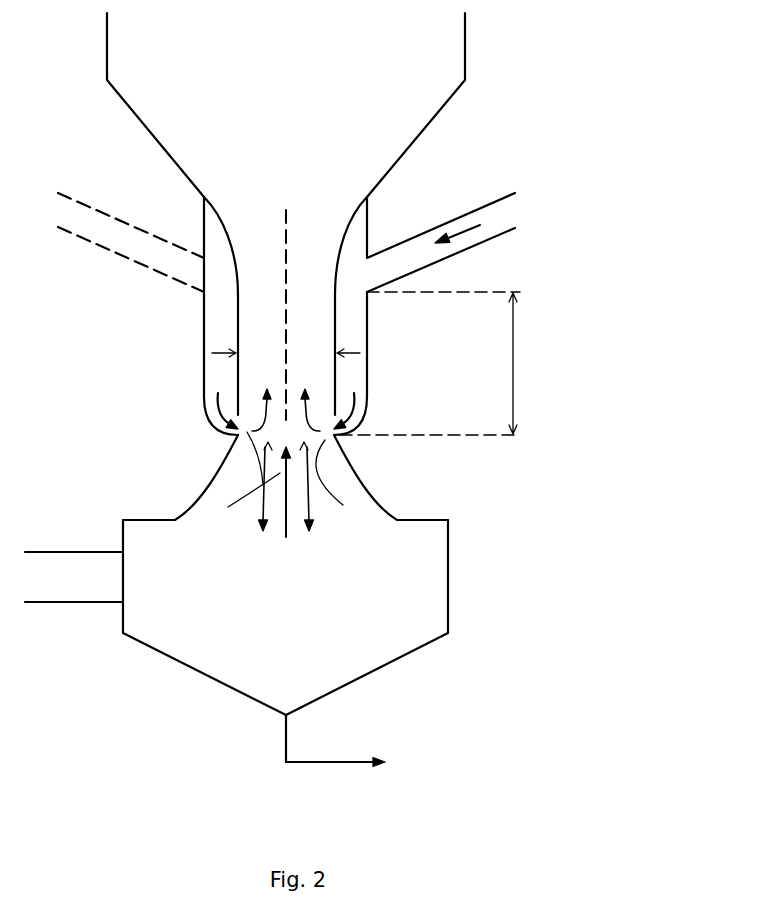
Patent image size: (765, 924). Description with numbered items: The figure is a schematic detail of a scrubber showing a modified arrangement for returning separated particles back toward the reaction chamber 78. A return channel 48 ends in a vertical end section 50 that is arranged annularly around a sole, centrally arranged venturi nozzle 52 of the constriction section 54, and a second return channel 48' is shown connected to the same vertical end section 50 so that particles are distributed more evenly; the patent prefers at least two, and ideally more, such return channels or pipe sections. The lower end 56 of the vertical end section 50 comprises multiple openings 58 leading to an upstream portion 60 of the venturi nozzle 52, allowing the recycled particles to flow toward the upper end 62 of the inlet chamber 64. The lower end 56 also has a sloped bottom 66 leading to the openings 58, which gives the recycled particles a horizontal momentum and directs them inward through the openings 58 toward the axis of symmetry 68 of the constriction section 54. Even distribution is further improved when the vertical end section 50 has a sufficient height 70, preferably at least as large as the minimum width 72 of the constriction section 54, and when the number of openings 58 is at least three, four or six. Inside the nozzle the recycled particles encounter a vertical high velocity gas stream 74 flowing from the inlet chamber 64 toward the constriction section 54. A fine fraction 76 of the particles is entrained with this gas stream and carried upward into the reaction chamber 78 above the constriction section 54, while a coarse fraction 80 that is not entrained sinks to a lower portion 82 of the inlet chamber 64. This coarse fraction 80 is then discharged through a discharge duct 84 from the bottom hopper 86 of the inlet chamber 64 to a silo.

The return channel 48 is at (441, 226).
The return channel 48' is at (131, 217).
The vertical end section 50 is at (368, 362).
The venturi nozzle 52 is at (238, 313).
The constriction section 54 is at (110, 333).
The lower end 56 is at (360, 408).
The openings 58 is at (338, 437).
The upstream portion 60 is at (250, 437).
The upper end 62 is at (336, 533).
The inlet chamber 64 is at (271, 610).
The sloped bottom 66 is at (358, 428).
The axis of symmetry 68 is at (292, 293).
The height 70 is at (440, 363).
The minimum width 72 is at (287, 342).
The vertical high velocity gas stream 74 is at (278, 476).
The fine fraction 76 is at (258, 408).
The reaction chamber 78 is at (269, 72).
The coarse fraction 80 is at (257, 497).
The lower portion 82 is at (278, 660).
The discharge duct 84 is at (340, 762).
The bottom hopper 86 is at (275, 703).